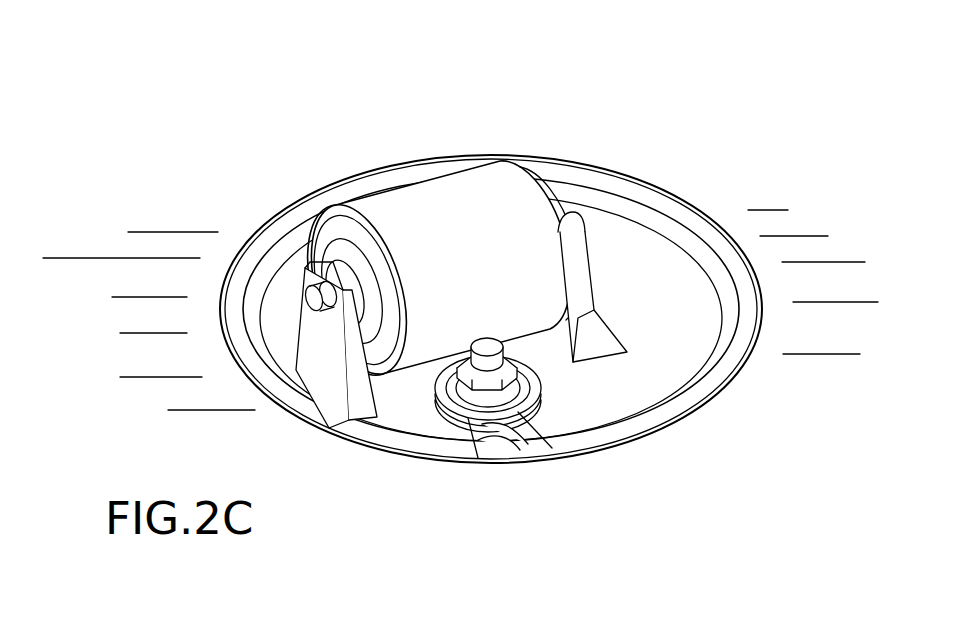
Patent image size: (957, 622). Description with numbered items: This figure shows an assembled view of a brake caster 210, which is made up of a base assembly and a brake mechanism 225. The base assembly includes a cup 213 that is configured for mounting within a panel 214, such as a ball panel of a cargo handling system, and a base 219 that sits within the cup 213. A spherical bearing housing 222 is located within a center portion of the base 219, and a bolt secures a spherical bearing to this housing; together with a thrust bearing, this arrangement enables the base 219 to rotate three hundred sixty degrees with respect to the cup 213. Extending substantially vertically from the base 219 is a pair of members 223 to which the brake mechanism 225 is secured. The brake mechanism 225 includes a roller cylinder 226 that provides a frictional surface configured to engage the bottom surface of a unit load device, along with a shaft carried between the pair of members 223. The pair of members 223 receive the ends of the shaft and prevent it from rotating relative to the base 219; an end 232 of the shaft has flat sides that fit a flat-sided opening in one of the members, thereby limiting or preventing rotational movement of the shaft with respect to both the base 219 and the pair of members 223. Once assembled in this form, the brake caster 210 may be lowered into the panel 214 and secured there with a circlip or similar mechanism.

The brake caster 210 is at (630, 76).
The cup 213 is at (678, 218).
The panel 214 is at (811, 414).
The base 219 is at (662, 403).
The spherical bearing housing 222 is at (470, 420).
The pair of members 223 is at (318, 373).
The brake mechanism 225 is at (397, 133).
The roller cylinder 226 is at (528, 327).
The end 232 is at (336, 280).